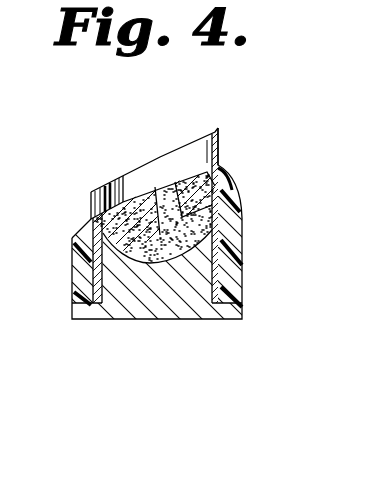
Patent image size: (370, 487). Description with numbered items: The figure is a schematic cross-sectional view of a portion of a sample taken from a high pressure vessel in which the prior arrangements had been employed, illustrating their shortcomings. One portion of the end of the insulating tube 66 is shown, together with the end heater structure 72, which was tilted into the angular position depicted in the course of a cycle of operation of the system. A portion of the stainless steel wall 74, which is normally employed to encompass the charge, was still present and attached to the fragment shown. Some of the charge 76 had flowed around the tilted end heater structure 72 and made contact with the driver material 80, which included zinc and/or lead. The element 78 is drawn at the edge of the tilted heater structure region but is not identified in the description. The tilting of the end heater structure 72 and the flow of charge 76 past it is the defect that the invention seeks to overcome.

The insulating tube 66 is at (232, 288).
The end heater structure 72 is at (176, 182).
The stainless steel wall 74 is at (218, 147).
The charge 76 is at (177, 240).
The disc edge 78 is at (148, 203).
The driver material 80 is at (168, 312).